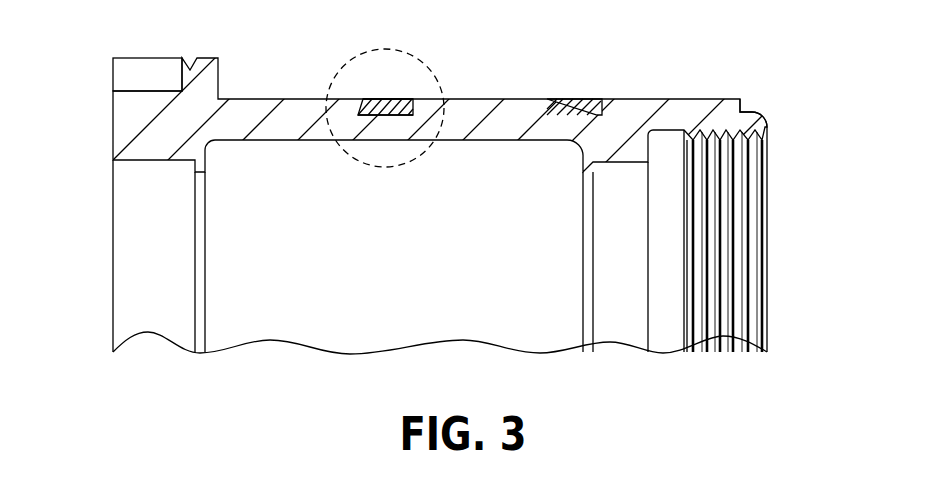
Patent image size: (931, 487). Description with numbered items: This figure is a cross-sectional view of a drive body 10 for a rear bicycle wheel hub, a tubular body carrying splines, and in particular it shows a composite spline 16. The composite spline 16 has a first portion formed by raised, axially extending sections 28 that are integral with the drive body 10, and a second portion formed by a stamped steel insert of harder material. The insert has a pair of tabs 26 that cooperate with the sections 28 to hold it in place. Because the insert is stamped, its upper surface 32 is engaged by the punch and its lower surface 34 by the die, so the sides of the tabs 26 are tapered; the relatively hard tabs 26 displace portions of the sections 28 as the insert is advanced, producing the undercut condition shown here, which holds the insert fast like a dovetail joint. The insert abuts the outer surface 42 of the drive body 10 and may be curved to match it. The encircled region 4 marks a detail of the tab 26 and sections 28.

The detail region of FIG. 4 is at (340, 62).
The drive body 10 is at (769, 127).
The composite spline 16 is at (741, 101).
The tabs 26 is at (410, 99).
The raised, axially extending sections 28 is at (265, 98).
The upper surface 32 is at (385, 99).
The lower surface 34 is at (385, 116).
The outer surface 42 is at (574, 99).